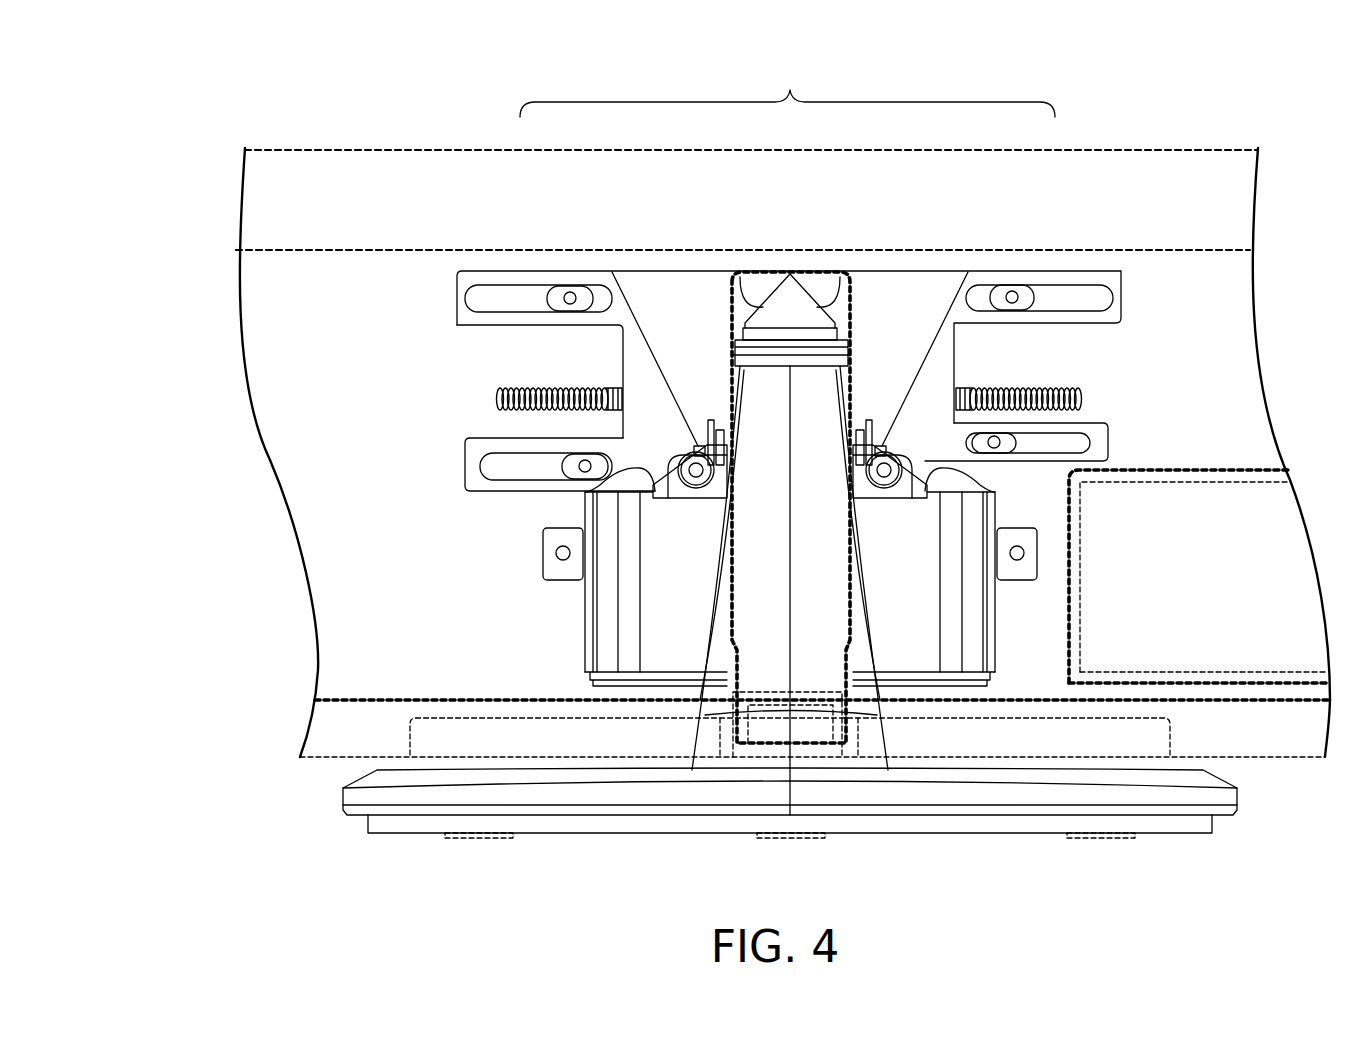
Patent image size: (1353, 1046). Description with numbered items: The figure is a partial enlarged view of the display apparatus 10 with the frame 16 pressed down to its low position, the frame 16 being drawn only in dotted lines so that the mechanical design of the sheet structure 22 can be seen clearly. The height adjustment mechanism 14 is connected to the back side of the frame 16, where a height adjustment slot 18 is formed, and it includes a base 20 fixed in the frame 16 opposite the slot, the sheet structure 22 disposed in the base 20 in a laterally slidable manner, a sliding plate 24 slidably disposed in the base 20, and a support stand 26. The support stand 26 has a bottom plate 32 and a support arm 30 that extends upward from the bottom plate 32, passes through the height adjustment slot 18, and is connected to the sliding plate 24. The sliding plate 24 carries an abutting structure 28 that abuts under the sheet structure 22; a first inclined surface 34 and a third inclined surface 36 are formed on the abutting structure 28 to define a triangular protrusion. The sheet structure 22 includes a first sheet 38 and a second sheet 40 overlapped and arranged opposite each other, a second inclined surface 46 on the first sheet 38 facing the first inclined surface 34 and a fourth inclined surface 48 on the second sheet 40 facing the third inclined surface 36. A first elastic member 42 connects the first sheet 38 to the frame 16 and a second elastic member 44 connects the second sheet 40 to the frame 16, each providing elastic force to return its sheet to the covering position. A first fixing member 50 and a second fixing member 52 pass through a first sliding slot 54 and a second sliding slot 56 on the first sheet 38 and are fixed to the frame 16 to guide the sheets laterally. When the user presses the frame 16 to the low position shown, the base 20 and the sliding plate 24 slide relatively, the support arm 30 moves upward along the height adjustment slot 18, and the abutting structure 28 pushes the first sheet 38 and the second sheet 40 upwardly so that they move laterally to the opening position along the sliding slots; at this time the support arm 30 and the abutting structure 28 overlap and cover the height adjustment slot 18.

The display apparatus 10 is at (268, 137).
The height adjustment mechanism 14 is at (1141, 304).
The frame 16 is at (1160, 250).
The height adjustment slot 18 is at (850, 601).
The base 20 is at (593, 658).
The sheet structure 22 is at (790, 90).
The sliding plate 24 is at (690, 498).
The support stand 26 is at (363, 835).
The abutting structure 28 is at (788, 318).
The support arm 30 is at (715, 645).
The bottom plate 32 is at (557, 790).
The first inclined surface 34 is at (830, 276).
The third inclined surface 36 is at (752, 276).
The first sheet 38 is at (910, 308).
The second sheet 40 is at (673, 308).
The first elastic member 42 is at (1045, 388).
The second elastic member 44 is at (604, 388).
The second inclined surface 46 is at (950, 472).
The fourth inclined surface 48 is at (630, 472).
The first fixing member 50 is at (992, 440).
The second fixing member 52 is at (583, 462).
The first sliding slot 54 is at (1071, 314).
The second sliding slot 56 is at (465, 298).